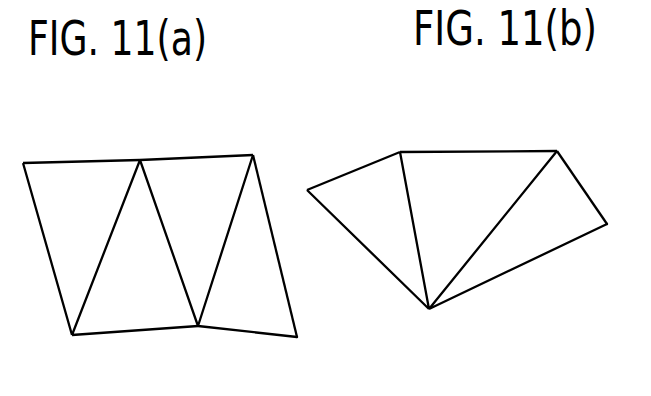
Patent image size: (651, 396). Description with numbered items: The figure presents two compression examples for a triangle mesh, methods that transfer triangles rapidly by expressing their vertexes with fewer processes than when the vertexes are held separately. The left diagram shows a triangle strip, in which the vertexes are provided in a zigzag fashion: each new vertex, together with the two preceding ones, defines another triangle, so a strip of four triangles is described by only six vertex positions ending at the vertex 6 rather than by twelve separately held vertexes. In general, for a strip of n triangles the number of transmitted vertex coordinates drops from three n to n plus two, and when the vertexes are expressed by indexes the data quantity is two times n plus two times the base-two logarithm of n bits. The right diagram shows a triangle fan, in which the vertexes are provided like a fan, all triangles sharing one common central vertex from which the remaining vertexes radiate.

The vertex 6 is at (307, 352).